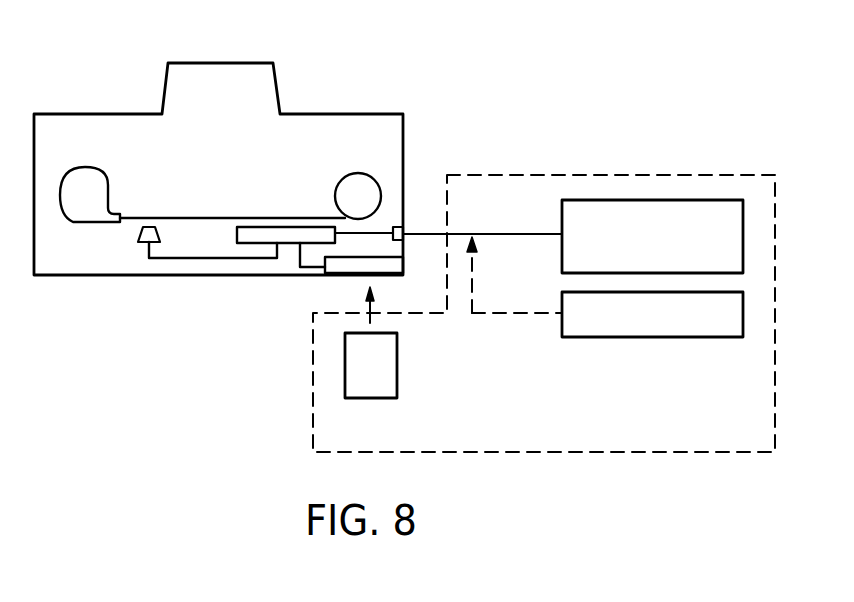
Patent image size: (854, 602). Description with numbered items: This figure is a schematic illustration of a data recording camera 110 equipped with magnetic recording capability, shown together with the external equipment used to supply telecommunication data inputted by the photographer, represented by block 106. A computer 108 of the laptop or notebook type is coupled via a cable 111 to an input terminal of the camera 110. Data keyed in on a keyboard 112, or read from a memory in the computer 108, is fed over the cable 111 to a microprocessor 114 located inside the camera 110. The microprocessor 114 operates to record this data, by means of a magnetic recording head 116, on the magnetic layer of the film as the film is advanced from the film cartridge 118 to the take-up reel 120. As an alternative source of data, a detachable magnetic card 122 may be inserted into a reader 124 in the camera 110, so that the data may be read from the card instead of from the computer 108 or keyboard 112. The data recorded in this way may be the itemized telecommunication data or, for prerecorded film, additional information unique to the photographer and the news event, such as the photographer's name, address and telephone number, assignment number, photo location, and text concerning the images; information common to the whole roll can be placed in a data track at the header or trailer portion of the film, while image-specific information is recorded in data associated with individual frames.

The telecommunication data input block 106 is at (637, 175).
The computer 108 is at (562, 218).
The camera 110 is at (342, 114).
The cable 111 is at (420, 233).
The keyboard 112 is at (592, 337).
The microprocessor 114 is at (295, 237).
The magnetic recording head 116 is at (140, 240).
The film cartridge 118 is at (80, 223).
The take-up reel 120 is at (373, 177).
The detachable magnetic card 122 is at (397, 367).
The reader 124 is at (340, 270).